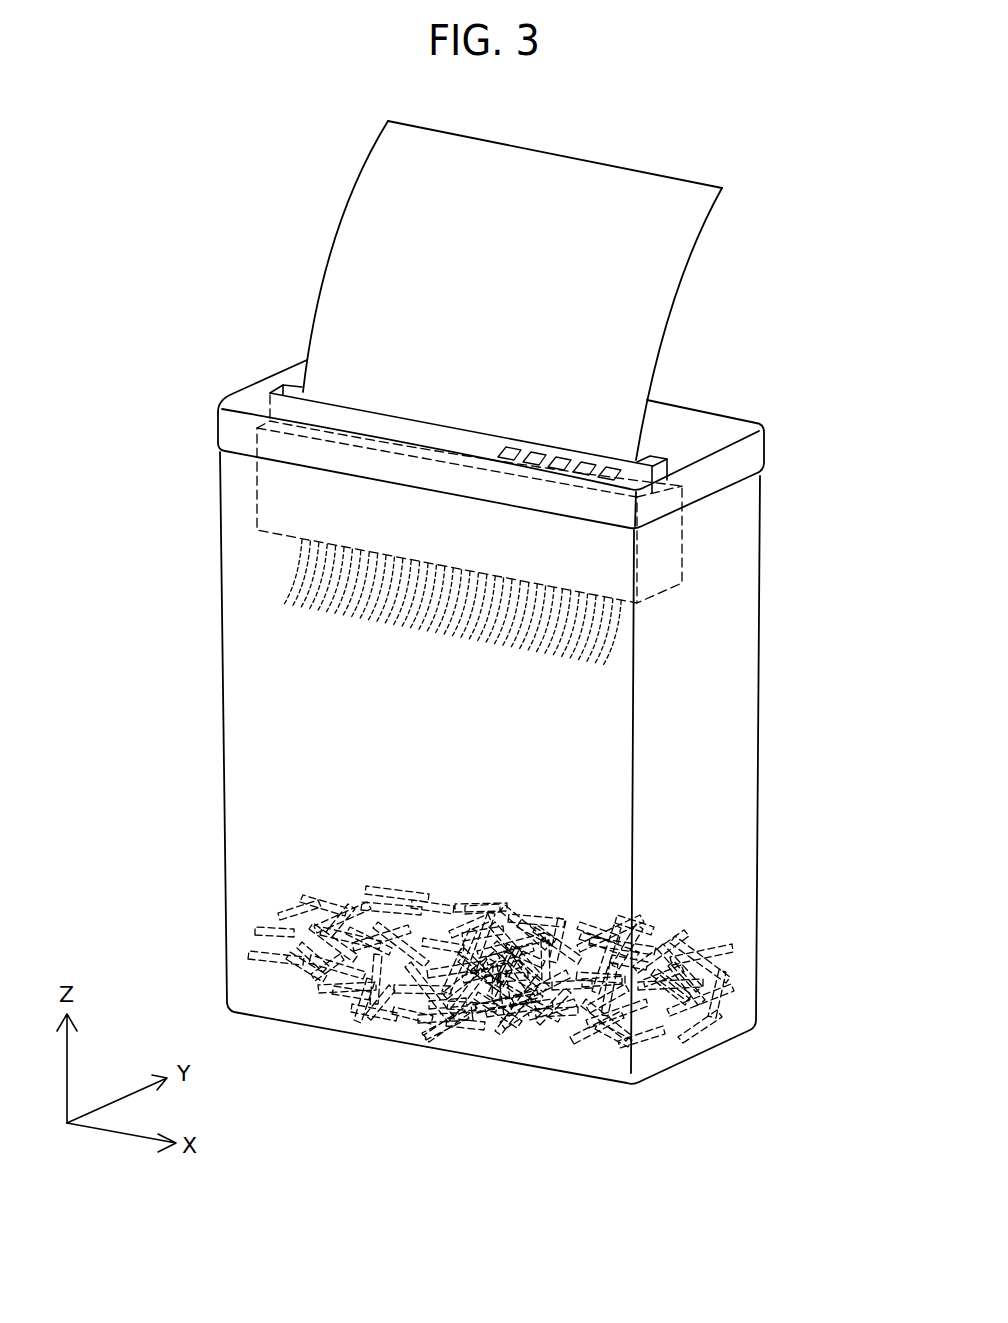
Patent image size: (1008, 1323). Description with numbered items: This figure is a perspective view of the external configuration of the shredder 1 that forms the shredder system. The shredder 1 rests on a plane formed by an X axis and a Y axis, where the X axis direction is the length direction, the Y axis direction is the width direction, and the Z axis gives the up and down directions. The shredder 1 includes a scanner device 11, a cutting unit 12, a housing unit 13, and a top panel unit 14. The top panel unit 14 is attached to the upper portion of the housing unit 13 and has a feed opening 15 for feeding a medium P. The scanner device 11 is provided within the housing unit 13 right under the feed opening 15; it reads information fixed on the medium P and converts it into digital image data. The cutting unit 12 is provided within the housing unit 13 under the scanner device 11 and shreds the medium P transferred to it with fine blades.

The shredder 1 is at (804, 513).
The medium P is at (673, 203).
The scanner device 11 is at (682, 557).
The cutting unit 12 is at (676, 614).
The housing unit 13 is at (758, 852).
The top panel unit 14 is at (715, 430).
The feed opening 15 is at (272, 393).